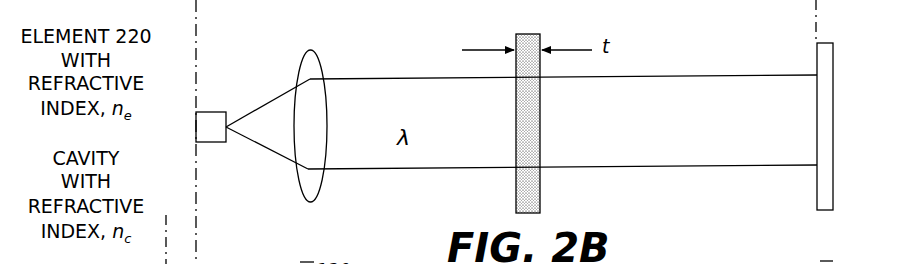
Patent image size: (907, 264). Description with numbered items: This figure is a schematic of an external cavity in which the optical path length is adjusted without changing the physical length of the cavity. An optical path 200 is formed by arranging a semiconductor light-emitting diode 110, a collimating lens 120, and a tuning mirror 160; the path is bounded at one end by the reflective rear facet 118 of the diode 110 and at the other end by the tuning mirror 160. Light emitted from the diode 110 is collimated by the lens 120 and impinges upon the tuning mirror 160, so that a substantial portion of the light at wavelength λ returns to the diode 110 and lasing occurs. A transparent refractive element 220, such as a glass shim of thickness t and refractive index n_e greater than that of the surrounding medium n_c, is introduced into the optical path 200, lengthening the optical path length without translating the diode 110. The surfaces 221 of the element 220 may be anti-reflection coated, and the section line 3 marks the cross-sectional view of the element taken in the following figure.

The semiconductor light-emitting diode 110 is at (208, 113).
The reflective rear facet 118 is at (195, 127).
The collimating lens 120 is at (312, 63).
The tuning mirror 160 is at (825, 90).
The optical path 200 is at (697, 77).
The transparent refractive element 220 is at (528, 38).
The surfaces 221 is at (512, 96).
The section line 3- 3 is at (513, 124).